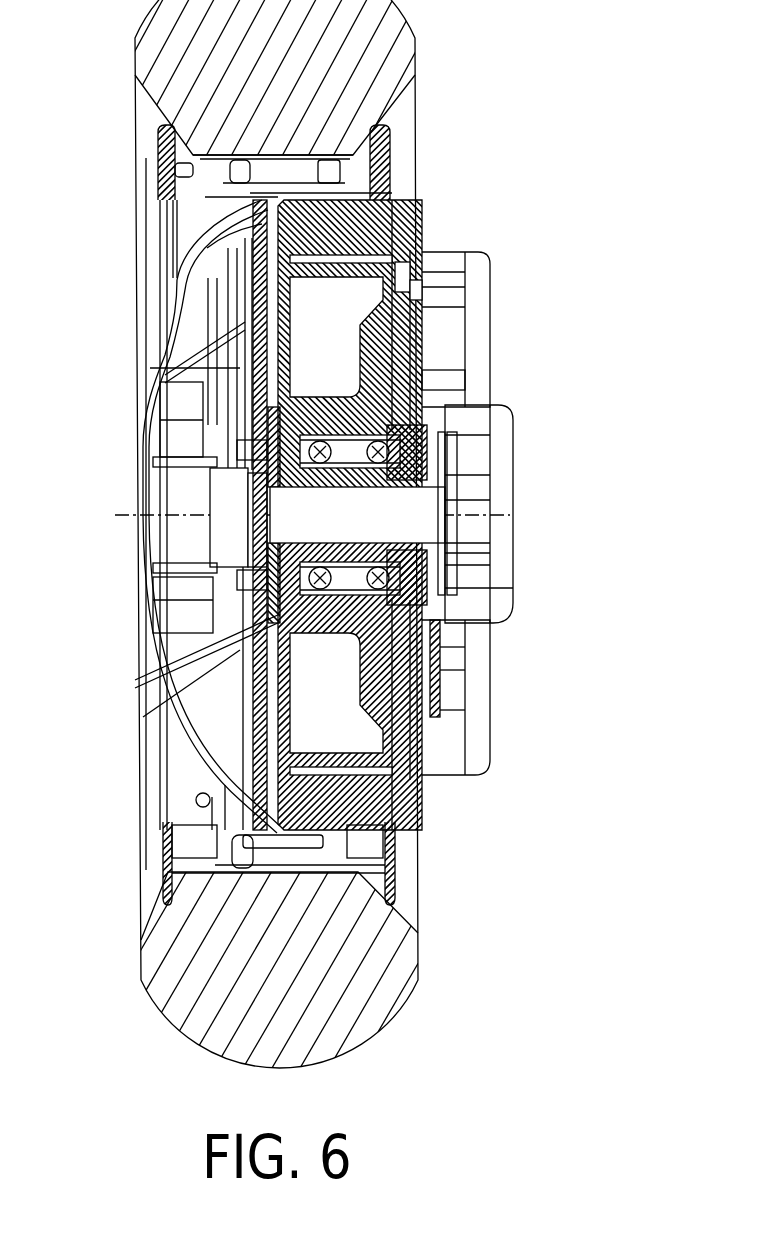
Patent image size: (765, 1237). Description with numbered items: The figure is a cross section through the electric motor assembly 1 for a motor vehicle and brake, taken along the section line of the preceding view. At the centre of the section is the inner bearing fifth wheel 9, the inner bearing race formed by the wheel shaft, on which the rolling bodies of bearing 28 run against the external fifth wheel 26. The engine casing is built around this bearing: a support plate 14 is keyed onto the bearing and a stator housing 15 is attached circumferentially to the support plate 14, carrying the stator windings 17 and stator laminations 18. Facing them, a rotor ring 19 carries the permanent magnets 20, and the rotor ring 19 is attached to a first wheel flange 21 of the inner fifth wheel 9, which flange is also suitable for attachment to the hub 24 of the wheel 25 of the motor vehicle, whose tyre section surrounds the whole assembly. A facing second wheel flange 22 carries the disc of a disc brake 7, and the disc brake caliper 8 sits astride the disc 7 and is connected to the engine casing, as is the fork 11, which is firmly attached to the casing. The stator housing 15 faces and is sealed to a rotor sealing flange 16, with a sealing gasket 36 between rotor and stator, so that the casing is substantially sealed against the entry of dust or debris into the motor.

The electric motor assembly 1 is at (455, 800).
The disc of a disc brake 7 is at (453, 707).
The disc brake caliper 8 is at (493, 515).
The inner bearing fifth wheel 9 is at (165, 705).
The fork 11 is at (473, 333).
The support plate 14 is at (460, 377).
The stator housing 15 is at (380, 183).
The rotor sealing flange 16 is at (270, 652).
The stator windings 17 is at (423, 220).
The stator laminations 18 is at (423, 237).
The rotor ring 19 is at (430, 283).
The permanent magnets 20 is at (430, 272).
The first wheel flange 21 is at (138, 600).
The second wheel flange 22 is at (447, 563).
The hub 24 is at (138, 470).
The wheel 25 is at (387, 62).
The external fifth wheel 26 is at (457, 440).
The rolling bodies of bearing 28 is at (457, 477).
The sealing gasket between rotor and stator 36 is at (157, 360).